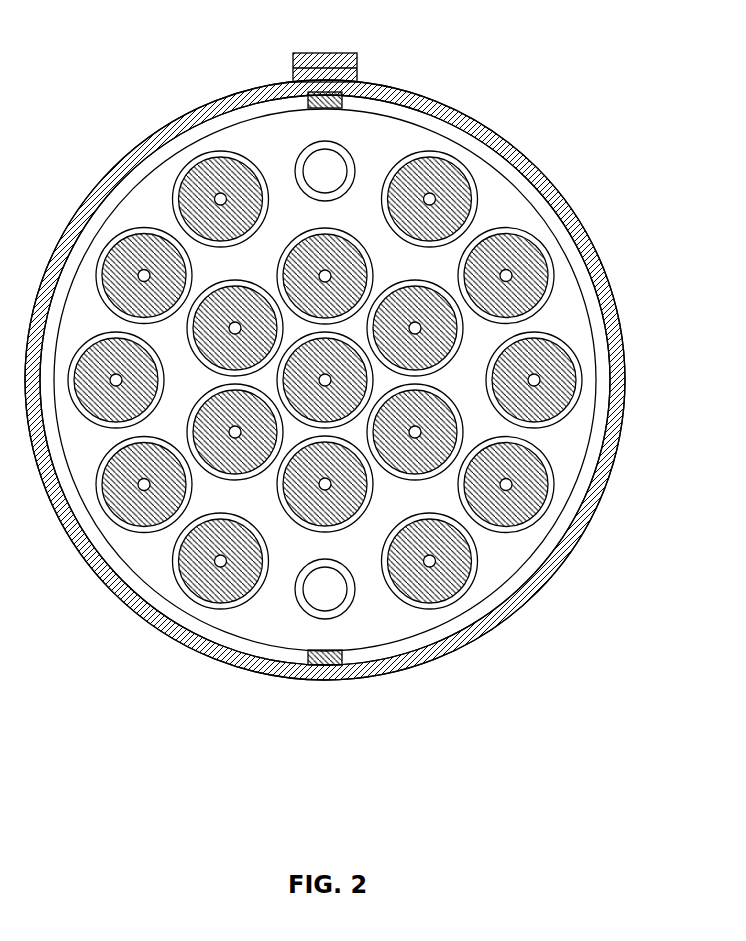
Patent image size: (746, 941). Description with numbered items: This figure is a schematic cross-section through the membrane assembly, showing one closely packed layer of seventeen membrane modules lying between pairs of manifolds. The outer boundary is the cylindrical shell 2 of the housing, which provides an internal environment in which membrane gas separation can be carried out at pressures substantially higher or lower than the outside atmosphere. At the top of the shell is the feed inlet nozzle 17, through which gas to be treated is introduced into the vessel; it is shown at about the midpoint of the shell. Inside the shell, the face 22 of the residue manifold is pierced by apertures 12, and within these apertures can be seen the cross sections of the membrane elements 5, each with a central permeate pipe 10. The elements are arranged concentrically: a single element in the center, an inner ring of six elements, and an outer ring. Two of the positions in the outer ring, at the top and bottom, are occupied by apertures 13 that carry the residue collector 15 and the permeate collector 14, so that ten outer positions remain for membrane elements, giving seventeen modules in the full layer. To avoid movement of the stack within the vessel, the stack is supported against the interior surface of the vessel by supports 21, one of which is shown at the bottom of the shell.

The cylindrical shell 2 is at (543, 166).
The membrane element 5 is at (578, 398).
The central permeate pipe 10 is at (540, 497).
The aperture 12 is at (567, 247).
The aperture 13 is at (347, 150).
The permeate collector 14 is at (349, 598).
The residue collector 15 is at (297, 163).
The feed inlet nozzle 17 is at (355, 55).
The support 21 is at (357, 665).
The face of the residue manifold 22 is at (575, 315).